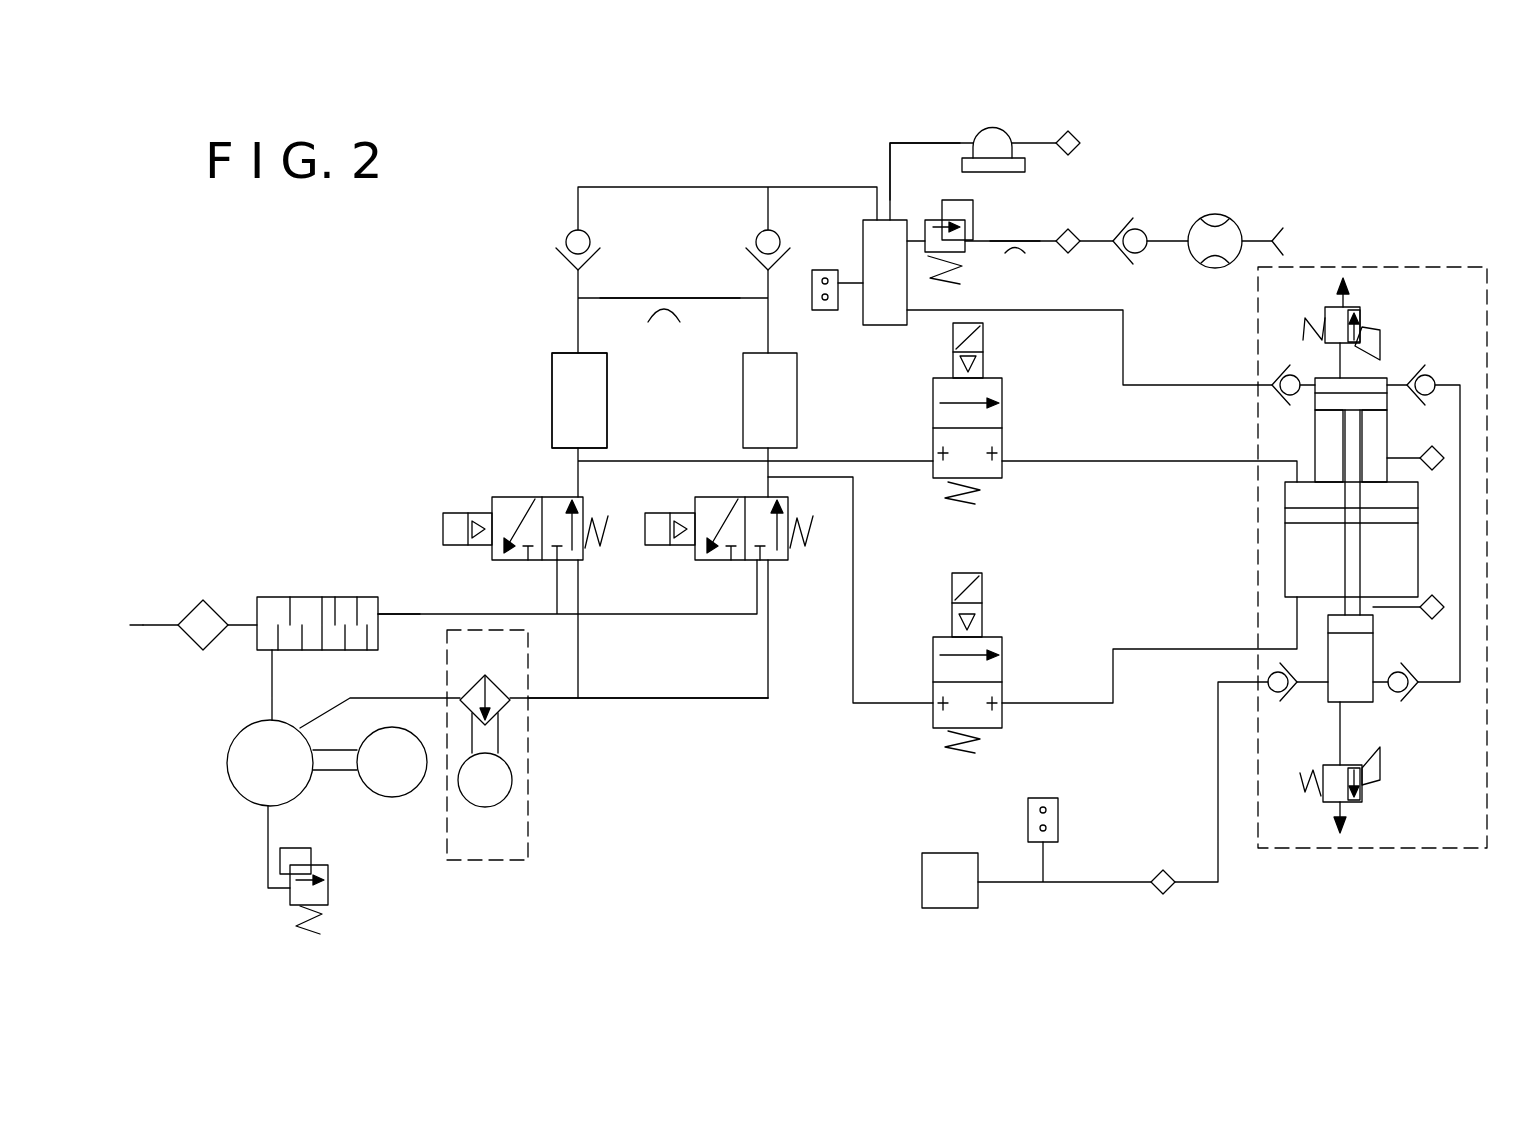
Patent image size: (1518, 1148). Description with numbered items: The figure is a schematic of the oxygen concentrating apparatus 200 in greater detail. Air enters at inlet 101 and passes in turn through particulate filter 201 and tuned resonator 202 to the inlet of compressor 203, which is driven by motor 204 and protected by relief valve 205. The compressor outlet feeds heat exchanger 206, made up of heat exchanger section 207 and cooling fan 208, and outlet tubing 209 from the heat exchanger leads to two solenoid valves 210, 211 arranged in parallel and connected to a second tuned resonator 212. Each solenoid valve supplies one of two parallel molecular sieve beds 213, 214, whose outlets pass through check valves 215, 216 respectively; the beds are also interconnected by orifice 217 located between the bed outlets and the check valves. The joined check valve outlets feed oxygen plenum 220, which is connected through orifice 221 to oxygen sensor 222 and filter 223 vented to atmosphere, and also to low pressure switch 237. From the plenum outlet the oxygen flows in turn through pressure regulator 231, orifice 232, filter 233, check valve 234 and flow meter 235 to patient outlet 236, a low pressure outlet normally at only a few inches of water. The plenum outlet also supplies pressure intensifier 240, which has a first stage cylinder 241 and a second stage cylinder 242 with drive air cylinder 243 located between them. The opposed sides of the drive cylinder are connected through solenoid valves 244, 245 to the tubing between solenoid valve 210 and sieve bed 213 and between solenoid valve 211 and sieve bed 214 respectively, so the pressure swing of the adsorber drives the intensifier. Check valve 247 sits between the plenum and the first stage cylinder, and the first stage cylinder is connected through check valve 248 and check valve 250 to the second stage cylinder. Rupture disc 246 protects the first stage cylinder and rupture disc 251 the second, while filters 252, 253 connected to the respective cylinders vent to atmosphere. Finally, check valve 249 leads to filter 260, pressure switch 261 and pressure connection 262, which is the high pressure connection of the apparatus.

The inlet 101 is at (143, 614).
The apparatus 200 is at (518, 398).
The particulate filter 201 is at (232, 662).
The tuned resonator 202 is at (300, 597).
The compressor 203 is at (291, 779).
The motor 204 is at (375, 796).
The relief valve 205 is at (328, 890).
The heat exchanger 206 is at (512, 875).
The heat exchanger section 207 is at (496, 682).
The cooling fan 208 is at (477, 810).
The outlet tubing 209 is at (606, 700).
The solenoid valve 210 is at (492, 500).
The solenoid valve 211 is at (700, 502).
The tuned resonator 212 is at (386, 578).
The sieve bed 213 is at (597, 408).
The sieve bed 214 is at (787, 408).
The check valve 215 is at (562, 244).
The check valve 216 is at (754, 238).
The orifice 217 is at (686, 266).
The oxygen plenum 220 is at (863, 316).
The orifice 221 is at (928, 156).
The oxygen sensor 222 is at (975, 126).
The filter 223 is at (1108, 116).
The pressure regulator 231 is at (935, 219).
The orifice 232 is at (1005, 229).
The filter 233 is at (1072, 230).
The check valve 234 is at (1137, 231).
The flow meter 235 is at (1211, 215).
The patient outlet 236 is at (1286, 238).
The low pressure switch 237 is at (825, 270).
The pressure intensifier 240 is at (1356, 864).
The first stage cylinder 241 is at (1320, 400).
The second stage cylinder 242 is at (1358, 700).
The drive air cylinder 243 is at (1310, 567).
The solenoid valve 244 is at (985, 347).
The solenoid valve 245 is at (1003, 635).
The rupture disc 246 is at (1362, 331).
The check valve 247 is at (1284, 369).
The check valve 248 is at (1438, 379).
The check valve 249 is at (1268, 700).
The check valve 250 is at (1405, 700).
The rupture disc 251 is at (1362, 796).
The filter 252 is at (1438, 450).
The filter 253 is at (1441, 612).
The filter 260 is at (1180, 850).
The pressure switch 261 is at (1060, 806).
The pressure connection 262 is at (922, 896).